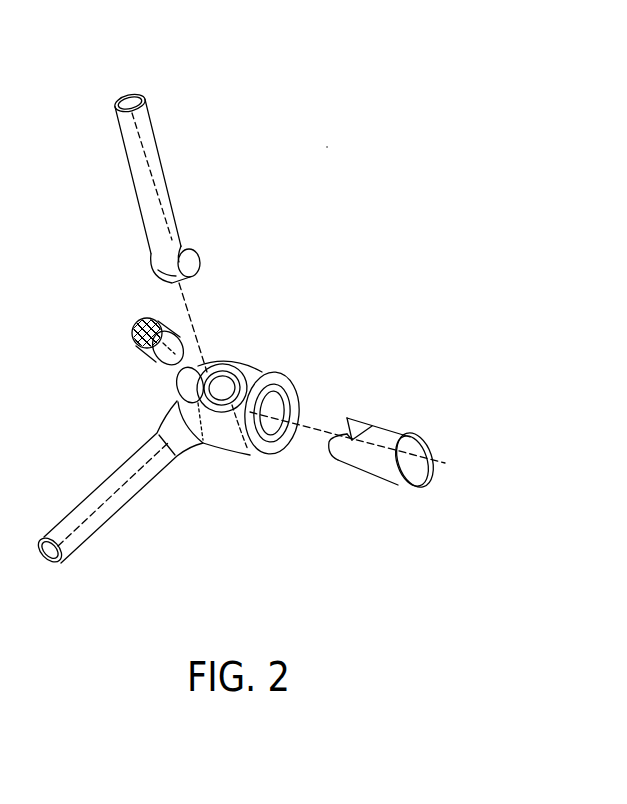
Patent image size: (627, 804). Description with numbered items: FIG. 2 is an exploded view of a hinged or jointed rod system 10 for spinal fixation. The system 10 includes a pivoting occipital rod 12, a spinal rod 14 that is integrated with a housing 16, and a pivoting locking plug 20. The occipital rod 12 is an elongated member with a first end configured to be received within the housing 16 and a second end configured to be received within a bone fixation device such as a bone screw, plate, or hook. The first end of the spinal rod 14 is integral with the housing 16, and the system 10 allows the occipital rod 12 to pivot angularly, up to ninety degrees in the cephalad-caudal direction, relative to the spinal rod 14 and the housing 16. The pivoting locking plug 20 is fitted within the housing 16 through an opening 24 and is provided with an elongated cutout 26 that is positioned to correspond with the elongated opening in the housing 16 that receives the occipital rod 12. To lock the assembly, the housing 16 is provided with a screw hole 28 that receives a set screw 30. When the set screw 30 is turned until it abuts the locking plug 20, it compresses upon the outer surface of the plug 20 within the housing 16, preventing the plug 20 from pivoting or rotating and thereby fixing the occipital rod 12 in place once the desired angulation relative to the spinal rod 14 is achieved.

The hinged rod system 10 is at (327, 147).
The occipital rod 12 is at (160, 137).
The spinal rod 14 is at (99, 531).
The housing 16 is at (277, 367).
The pivoting locking plug 20 is at (393, 423).
The opening 24 is at (268, 423).
The elongated cutout 26 is at (351, 440).
The screw hole 28 is at (226, 385).
The set screw 30 is at (146, 358).